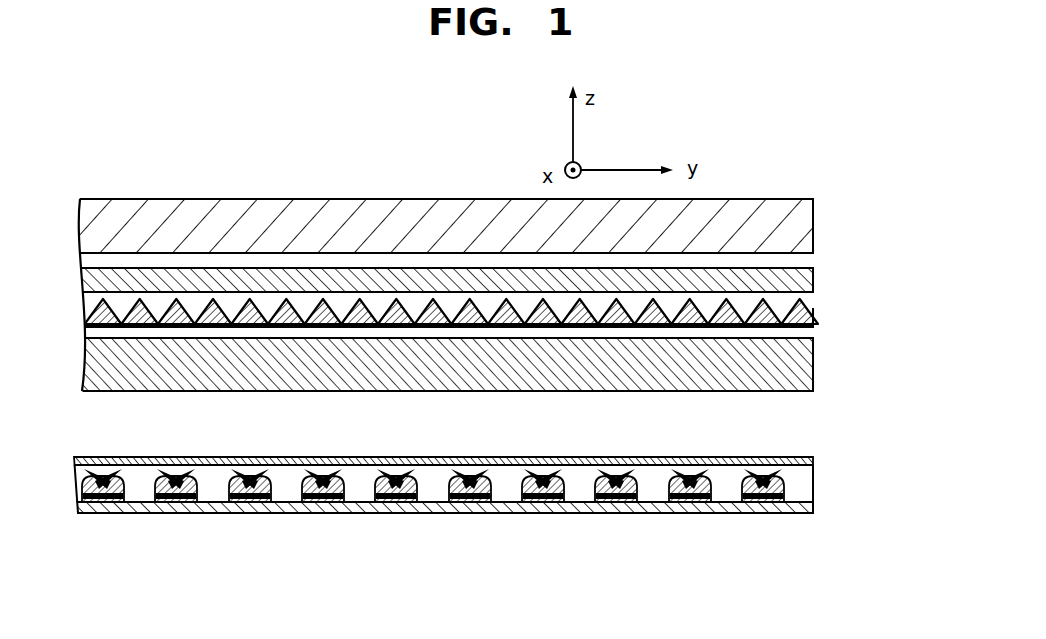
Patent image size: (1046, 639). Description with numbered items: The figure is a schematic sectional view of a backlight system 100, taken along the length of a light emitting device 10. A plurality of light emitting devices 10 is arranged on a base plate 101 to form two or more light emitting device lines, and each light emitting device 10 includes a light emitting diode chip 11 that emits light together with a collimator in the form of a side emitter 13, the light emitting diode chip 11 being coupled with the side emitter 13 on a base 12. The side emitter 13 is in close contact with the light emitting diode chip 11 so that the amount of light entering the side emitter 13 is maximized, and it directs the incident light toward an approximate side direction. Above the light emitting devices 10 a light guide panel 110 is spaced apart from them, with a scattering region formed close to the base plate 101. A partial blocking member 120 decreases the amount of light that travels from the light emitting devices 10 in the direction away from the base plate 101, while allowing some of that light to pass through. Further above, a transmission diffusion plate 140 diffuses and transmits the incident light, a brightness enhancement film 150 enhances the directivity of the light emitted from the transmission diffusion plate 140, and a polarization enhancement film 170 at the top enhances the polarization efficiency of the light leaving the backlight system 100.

The backlight system 100 is at (504, 358).
The polarization enhancement film 170 is at (436, 226).
The brightness enhancement film 150 is at (439, 298).
The transmission diffusion plate 140 is at (436, 364).
The partial blocking member 120 is at (813, 462).
The light guide panel 110 is at (813, 490).
The base plate 101 is at (813, 512).
The light emitting device 10 is at (178, 544).
The light emitting diode chip 11 is at (152, 513).
The base 12 is at (182, 513).
The side emitter 13 is at (198, 520).